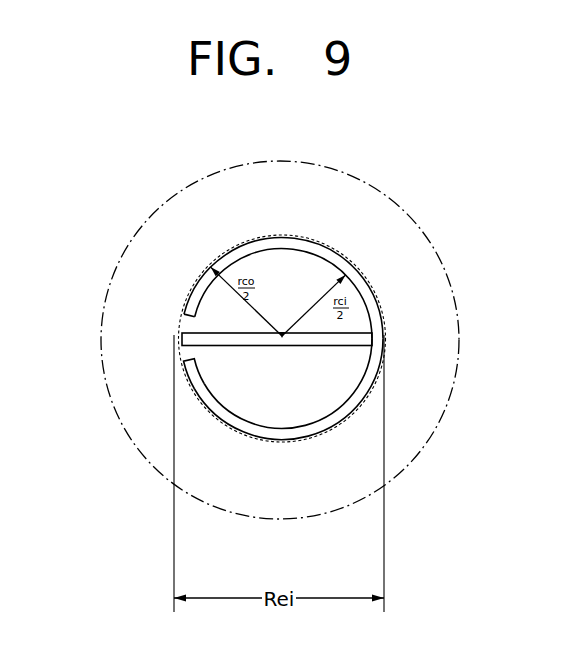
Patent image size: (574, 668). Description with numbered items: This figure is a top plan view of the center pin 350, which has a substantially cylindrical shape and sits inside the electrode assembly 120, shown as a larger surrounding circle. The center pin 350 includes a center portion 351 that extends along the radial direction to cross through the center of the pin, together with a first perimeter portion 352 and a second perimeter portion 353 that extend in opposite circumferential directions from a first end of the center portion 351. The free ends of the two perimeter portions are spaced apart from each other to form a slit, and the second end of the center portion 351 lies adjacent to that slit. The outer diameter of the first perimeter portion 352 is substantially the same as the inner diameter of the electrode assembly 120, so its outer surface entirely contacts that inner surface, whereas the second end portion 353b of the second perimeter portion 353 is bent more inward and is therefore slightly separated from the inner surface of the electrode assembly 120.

The electrode assembly 120 is at (375, 228).
The center pin 350 is at (273, 396).
The center portion 351 is at (317, 341).
The first perimeter portion 352 is at (281, 247).
The second perimeter portion 353 is at (209, 451).
The second end portion of the second perimeter portion 353b is at (196, 379).